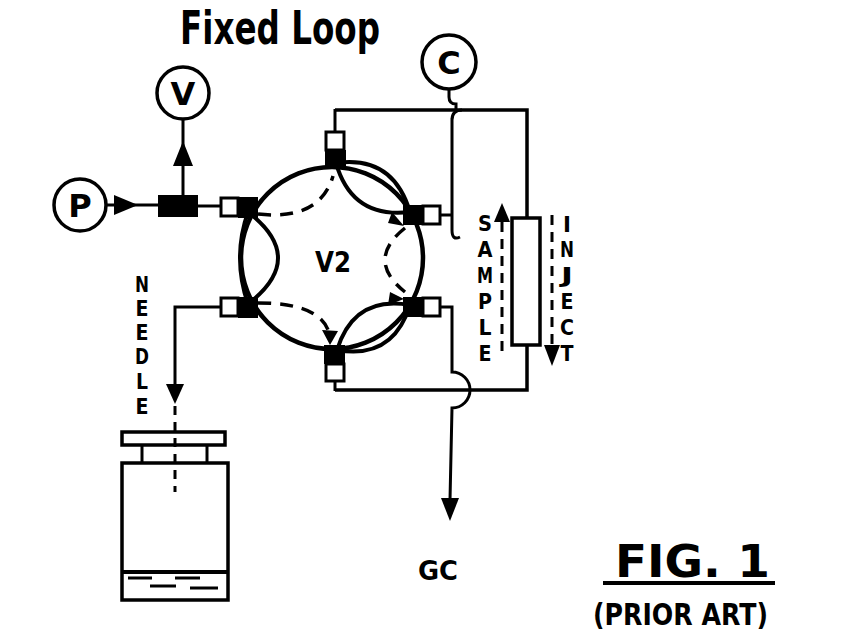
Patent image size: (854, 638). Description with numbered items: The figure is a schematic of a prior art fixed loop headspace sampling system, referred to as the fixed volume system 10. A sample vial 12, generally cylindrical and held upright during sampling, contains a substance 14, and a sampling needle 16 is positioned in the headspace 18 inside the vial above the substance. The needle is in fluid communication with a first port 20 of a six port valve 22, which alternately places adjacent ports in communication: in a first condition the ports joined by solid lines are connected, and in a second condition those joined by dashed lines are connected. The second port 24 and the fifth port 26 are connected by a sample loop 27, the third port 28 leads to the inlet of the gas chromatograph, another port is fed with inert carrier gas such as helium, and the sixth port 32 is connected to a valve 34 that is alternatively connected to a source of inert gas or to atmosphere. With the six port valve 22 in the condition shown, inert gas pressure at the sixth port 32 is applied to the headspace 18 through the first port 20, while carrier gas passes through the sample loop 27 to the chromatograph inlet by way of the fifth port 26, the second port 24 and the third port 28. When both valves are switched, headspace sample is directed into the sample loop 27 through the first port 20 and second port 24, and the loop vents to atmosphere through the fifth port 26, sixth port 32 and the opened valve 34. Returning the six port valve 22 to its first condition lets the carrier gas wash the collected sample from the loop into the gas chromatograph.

The fixed volume system 10 is at (650, 452).
The sample vial 12 is at (228, 527).
The substance 14 is at (228, 573).
The sampling needle 16 is at (173, 472).
The headspace 18 is at (208, 497).
The first port 20 is at (234, 320).
The six port valve 22 is at (293, 341).
The second port 24 is at (345, 361).
The fifth port 26 is at (347, 160).
The sample loop 27 is at (527, 183).
The third port 28 is at (423, 297).
The sixth port 32 is at (228, 197).
The valve 34 is at (180, 218).